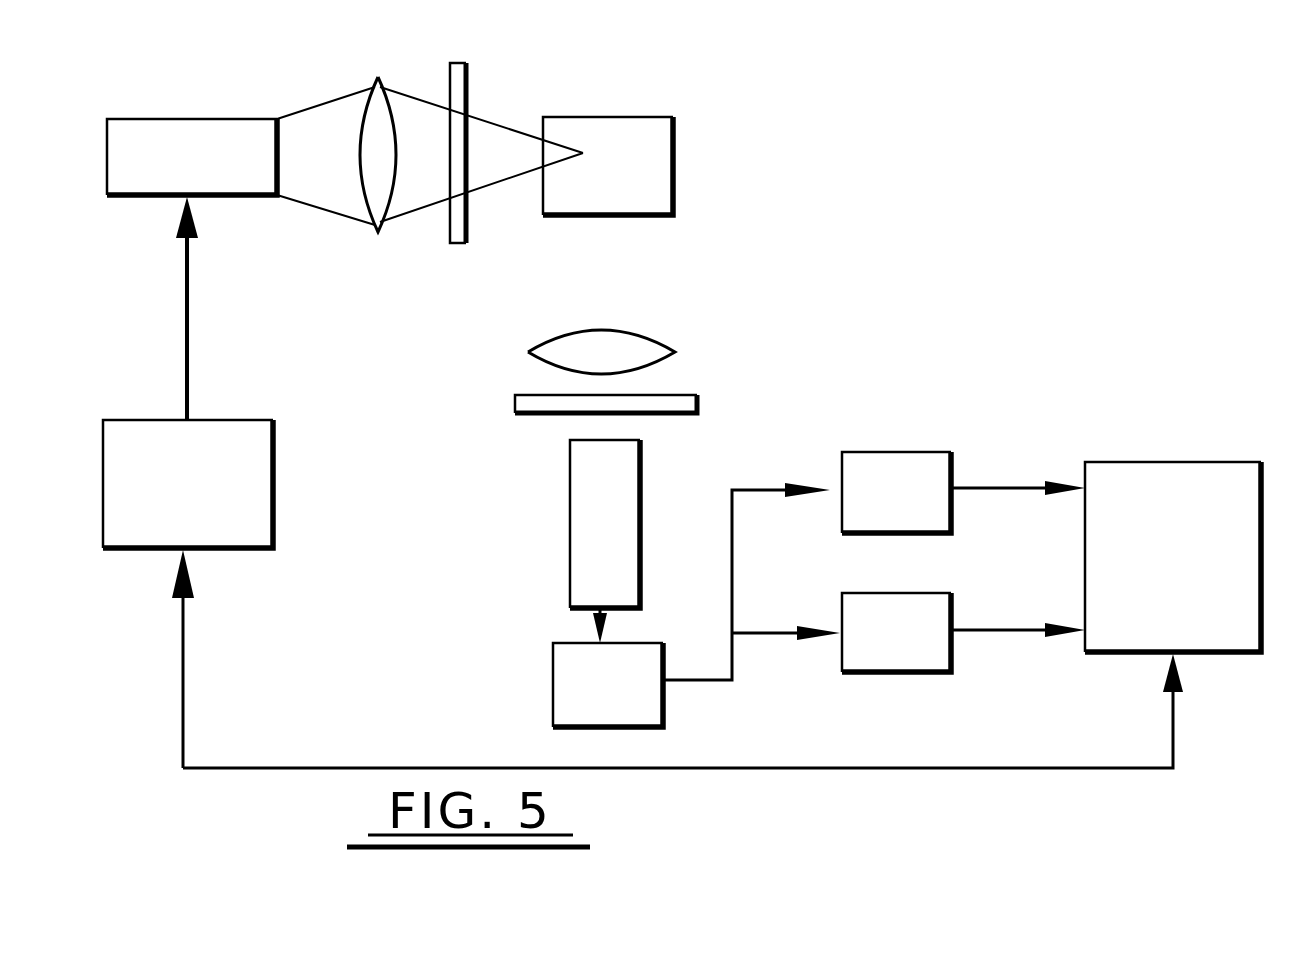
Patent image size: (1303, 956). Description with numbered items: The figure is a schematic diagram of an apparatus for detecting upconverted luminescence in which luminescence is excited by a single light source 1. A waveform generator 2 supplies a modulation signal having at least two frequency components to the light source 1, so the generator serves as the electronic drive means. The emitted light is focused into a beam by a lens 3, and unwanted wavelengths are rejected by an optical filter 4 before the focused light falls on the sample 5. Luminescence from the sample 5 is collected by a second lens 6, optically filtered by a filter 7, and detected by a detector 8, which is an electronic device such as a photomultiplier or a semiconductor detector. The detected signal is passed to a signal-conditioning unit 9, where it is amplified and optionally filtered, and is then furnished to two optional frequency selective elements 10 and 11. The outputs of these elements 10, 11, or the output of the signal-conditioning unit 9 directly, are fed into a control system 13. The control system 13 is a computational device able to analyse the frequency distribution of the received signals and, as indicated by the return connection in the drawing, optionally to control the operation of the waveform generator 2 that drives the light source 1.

The light source 1 is at (208, 155).
The waveform generator 2 is at (162, 463).
The lens 3 is at (373, 87).
The optical filter 4 is at (455, 88).
The sample 5 is at (638, 138).
The lens 6 is at (652, 353).
The filter 7 is at (677, 402).
The detector 8 is at (602, 505).
The signal-conditioning unit 9 is at (570, 658).
The frequency selective element 10 is at (890, 487).
The frequency selective element 11 is at (908, 622).
The control system 13 is at (1213, 523).